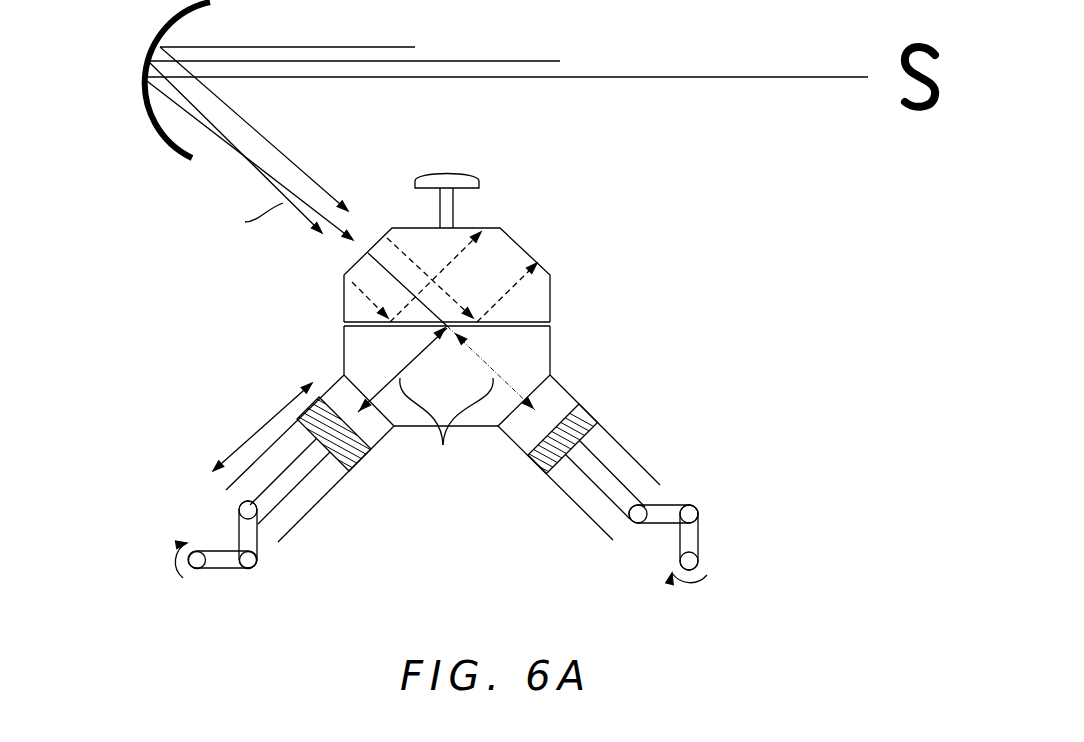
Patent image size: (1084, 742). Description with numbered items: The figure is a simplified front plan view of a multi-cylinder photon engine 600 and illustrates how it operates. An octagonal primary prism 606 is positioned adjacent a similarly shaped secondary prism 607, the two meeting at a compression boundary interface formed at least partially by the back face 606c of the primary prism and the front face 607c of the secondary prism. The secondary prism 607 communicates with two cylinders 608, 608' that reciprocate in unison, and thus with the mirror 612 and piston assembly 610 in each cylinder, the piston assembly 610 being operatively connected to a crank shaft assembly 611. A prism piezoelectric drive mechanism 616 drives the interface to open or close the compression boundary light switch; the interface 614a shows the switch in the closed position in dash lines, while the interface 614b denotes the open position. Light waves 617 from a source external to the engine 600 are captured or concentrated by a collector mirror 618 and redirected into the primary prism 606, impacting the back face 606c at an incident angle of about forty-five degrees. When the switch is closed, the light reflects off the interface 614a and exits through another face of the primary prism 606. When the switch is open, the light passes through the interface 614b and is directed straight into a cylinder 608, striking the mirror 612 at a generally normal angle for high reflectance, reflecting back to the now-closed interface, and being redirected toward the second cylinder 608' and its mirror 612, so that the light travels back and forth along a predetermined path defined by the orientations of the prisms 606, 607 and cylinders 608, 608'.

The multi-cylinder photon engine 600 is at (812, 297).
The primary prism 606 is at (552, 296).
The back face of primary prism 606c is at (551, 347).
The secondary prism 607 is at (551, 341).
The front face of secondary prism 607c is at (551, 314).
The cylinder 608 is at (619, 457).
The second cylinder 608' is at (284, 476).
The piston assembly 610 is at (583, 436).
The crank shaft assembly 611 is at (699, 518).
The mirror 612 is at (561, 413).
The compression boundary interface in closed position 614a is at (506, 318).
The compression boundary interface in open position 614b is at (345, 337).
The prism piezoelectric drive mechanism 616 is at (480, 184).
The light waves 617 is at (902, 50).
The collector mirror 618 is at (147, 123).